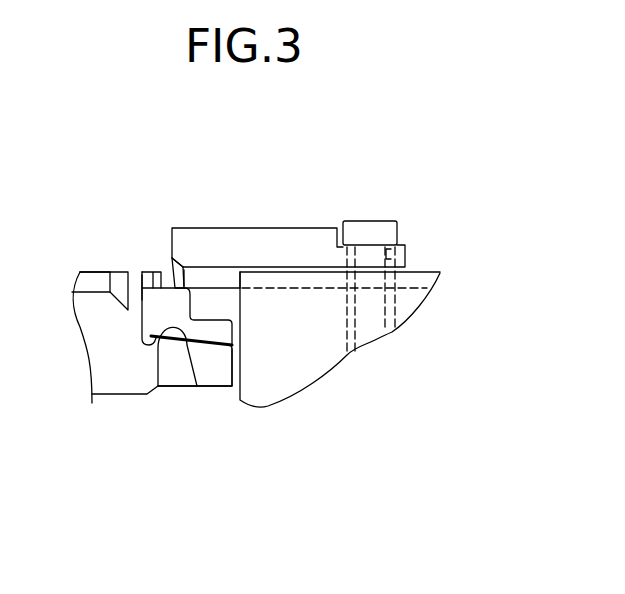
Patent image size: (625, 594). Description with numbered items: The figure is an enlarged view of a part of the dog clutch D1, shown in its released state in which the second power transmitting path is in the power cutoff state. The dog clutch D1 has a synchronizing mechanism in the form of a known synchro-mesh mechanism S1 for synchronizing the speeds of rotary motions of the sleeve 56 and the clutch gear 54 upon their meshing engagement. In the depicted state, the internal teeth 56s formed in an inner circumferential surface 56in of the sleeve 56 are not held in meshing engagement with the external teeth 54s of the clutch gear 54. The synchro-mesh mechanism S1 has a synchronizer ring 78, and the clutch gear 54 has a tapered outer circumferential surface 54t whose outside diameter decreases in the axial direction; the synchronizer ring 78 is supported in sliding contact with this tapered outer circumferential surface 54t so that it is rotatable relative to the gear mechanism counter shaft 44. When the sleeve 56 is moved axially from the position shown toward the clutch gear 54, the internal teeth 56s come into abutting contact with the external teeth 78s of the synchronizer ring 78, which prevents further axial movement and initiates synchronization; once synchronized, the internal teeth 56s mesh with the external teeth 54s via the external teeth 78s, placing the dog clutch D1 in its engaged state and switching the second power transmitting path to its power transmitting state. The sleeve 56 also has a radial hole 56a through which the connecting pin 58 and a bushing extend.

The gear mechanism counter shaft 44 is at (300, 368).
The clutch gear 54 is at (108, 378).
The external teeth 54s is at (88, 280).
The tapered outer circumferential surface 54t is at (158, 388).
The sleeve 56 is at (280, 238).
The internal teeth 56s is at (177, 270).
The inner circumferential surface 56in is at (203, 280).
The radial hole 56a is at (405, 262).
The connecting pin 58 is at (370, 228).
The synchronizer ring 78 is at (202, 332).
The external teeth 78s is at (143, 277).
The synchro-mesh mechanism S1 is at (145, 247).
The dog clutch D1 is at (129, 480).